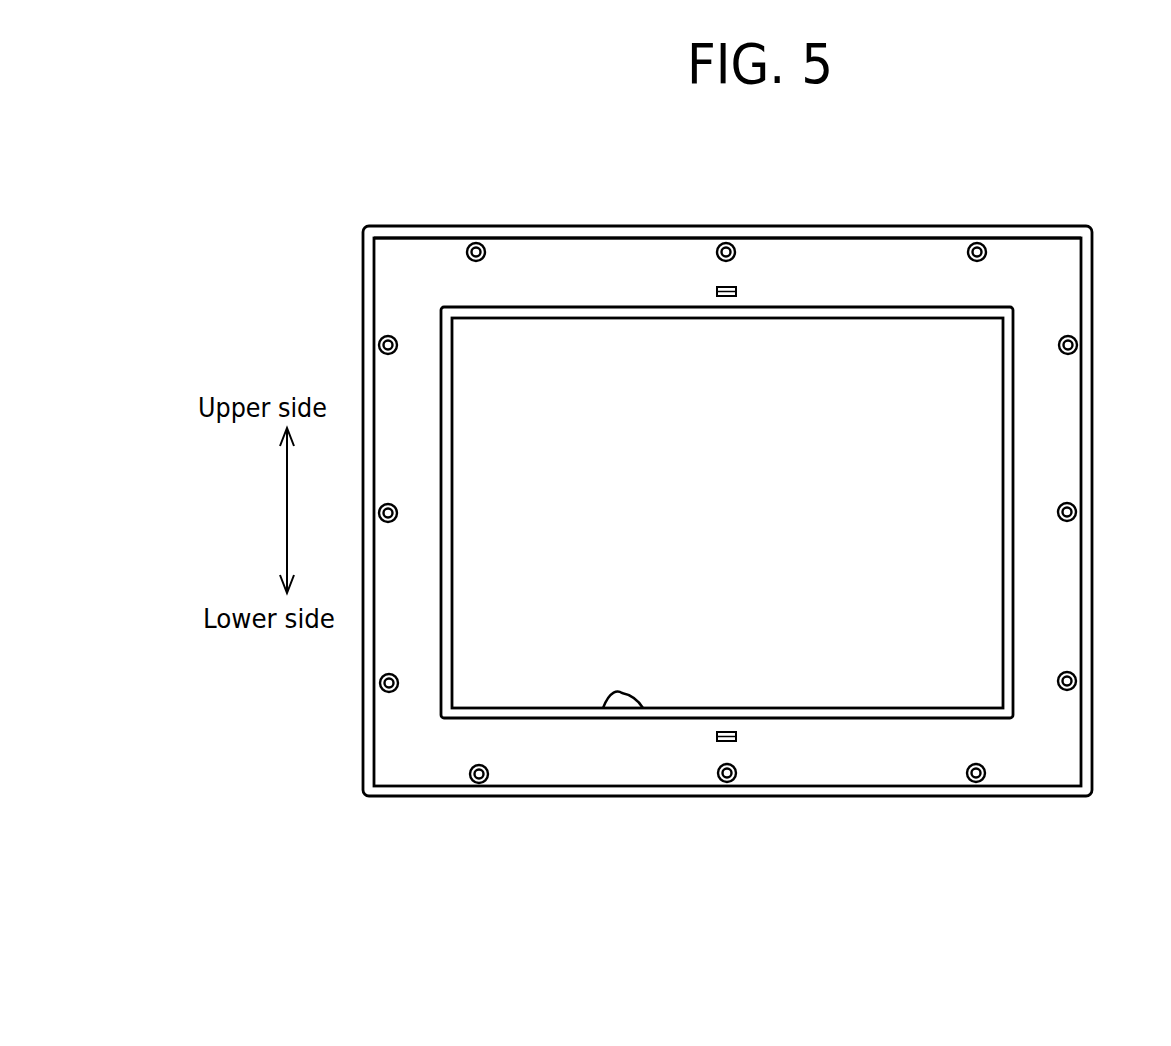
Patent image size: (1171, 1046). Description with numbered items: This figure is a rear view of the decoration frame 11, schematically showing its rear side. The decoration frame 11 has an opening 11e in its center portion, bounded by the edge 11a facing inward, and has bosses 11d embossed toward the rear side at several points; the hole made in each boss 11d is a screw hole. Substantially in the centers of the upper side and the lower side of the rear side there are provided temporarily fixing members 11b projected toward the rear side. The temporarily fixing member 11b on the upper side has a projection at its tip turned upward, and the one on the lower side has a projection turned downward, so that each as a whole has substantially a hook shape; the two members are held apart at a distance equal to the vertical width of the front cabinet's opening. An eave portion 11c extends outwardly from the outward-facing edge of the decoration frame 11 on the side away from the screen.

The decoration frame 11 is at (723, 496).
The edge facing inward 11a is at (865, 312).
The temporarily fixing member 11b is at (736, 288).
The eave portion 11c is at (587, 228).
The boss 11d is at (475, 240).
The opening 11e is at (605, 698).